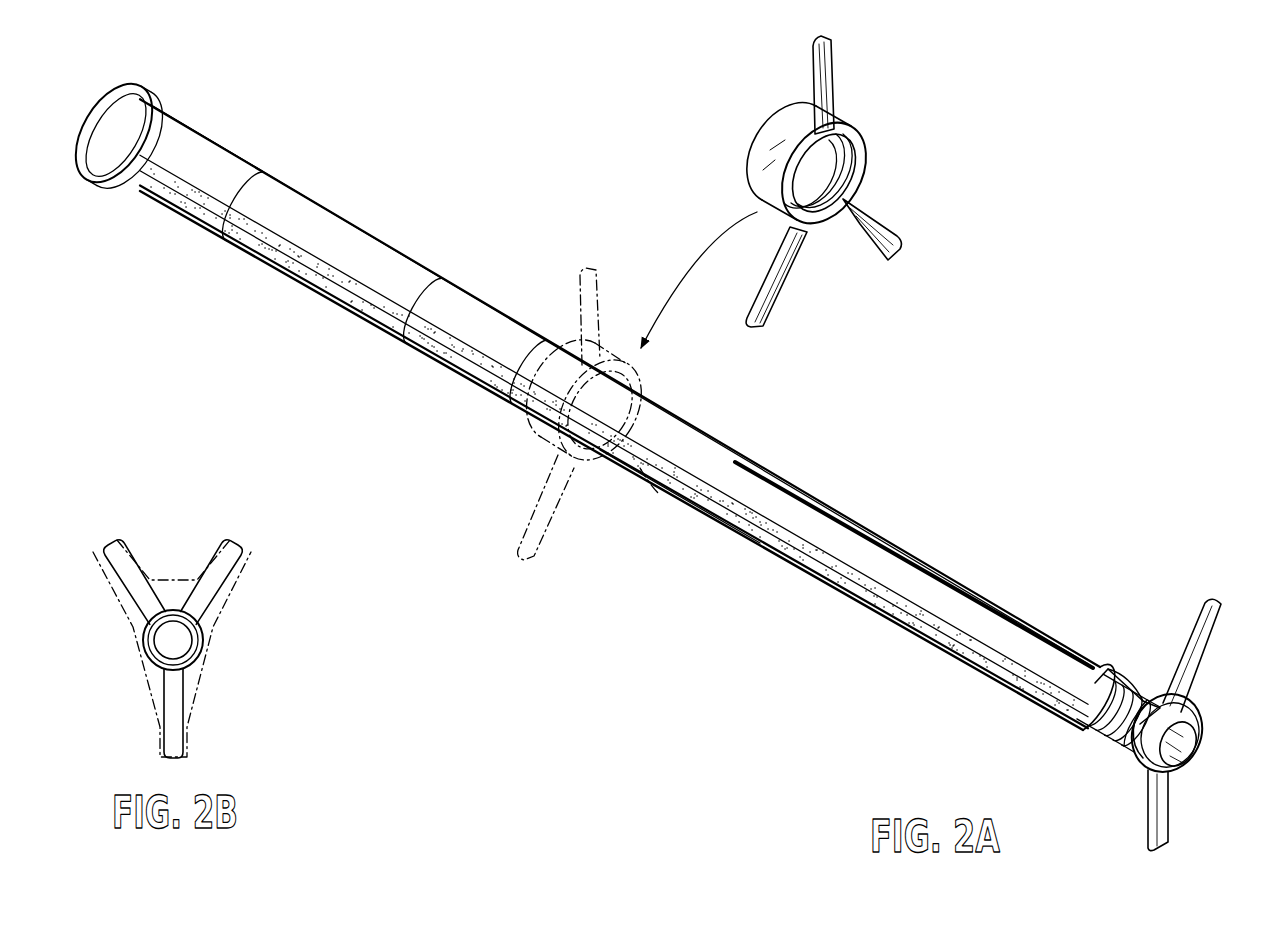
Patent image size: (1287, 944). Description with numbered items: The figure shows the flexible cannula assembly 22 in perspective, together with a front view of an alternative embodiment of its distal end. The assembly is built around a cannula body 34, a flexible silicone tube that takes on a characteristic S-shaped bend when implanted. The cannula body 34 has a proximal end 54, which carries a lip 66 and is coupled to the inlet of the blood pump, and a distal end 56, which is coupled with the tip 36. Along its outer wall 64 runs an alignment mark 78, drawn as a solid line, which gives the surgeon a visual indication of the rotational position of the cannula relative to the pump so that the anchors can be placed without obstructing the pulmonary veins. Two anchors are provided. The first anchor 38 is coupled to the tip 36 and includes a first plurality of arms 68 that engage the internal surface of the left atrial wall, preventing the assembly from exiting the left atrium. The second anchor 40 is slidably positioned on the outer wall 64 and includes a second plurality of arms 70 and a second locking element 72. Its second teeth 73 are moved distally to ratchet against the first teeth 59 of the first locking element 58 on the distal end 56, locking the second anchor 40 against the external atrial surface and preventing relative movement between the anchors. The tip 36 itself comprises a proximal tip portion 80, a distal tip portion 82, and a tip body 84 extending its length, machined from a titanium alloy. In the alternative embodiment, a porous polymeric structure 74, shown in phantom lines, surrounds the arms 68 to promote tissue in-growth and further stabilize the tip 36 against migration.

In FIG. 2A, the flexible cannula assembly 22 is at (400, 161).
In FIG. 2A, the cannula body 34 is at (422, 264).
In FIG. 2A, the tip 36 is at (1200, 722).
In FIG. 2B, the tip 36 is at (210, 640).
In FIG. 2A, the first anchor 38 is at (1215, 599).
In FIG. 2B, the first anchor 38 is at (133, 553).
In FIG. 2A, the second anchor 40 is at (586, 268).
In FIG. 2A, the proximal end 54 is at (197, 130).
In FIG. 2A, the distal end 56 is at (1062, 712).
In FIG. 2A, the first locking element 58 is at (1148, 676).
In FIG. 2A, the first teeth 59 is at (1133, 676).
In FIG. 2A, the outer wall 64 is at (703, 513).
In FIG. 2A, the lip 66 is at (133, 88).
In FIG. 2A, the first plurality of arms 68 is at (1109, 672).
In FIG. 2B, the first plurality of arms 68 is at (118, 552).
In FIG. 2A, the second plurality of arms 70 is at (603, 300).
In FIG. 2A, the second locking element 72 is at (847, 160).
In FIG. 2A, the second teeth 73 is at (833, 176).
In FIG. 2B, the porous polymeric structure 74 is at (128, 616).
In FIG. 2A, the alignment mark 78 is at (937, 576).
In FIG. 2A, the proximal tip portion 80 is at (1096, 723).
In FIG. 2A, the distal tip portion 82 is at (1197, 750).
In FIG. 2B, the distal tip portion 82 is at (196, 656).
In FIG. 2A, the tip body 84 is at (1128, 744).